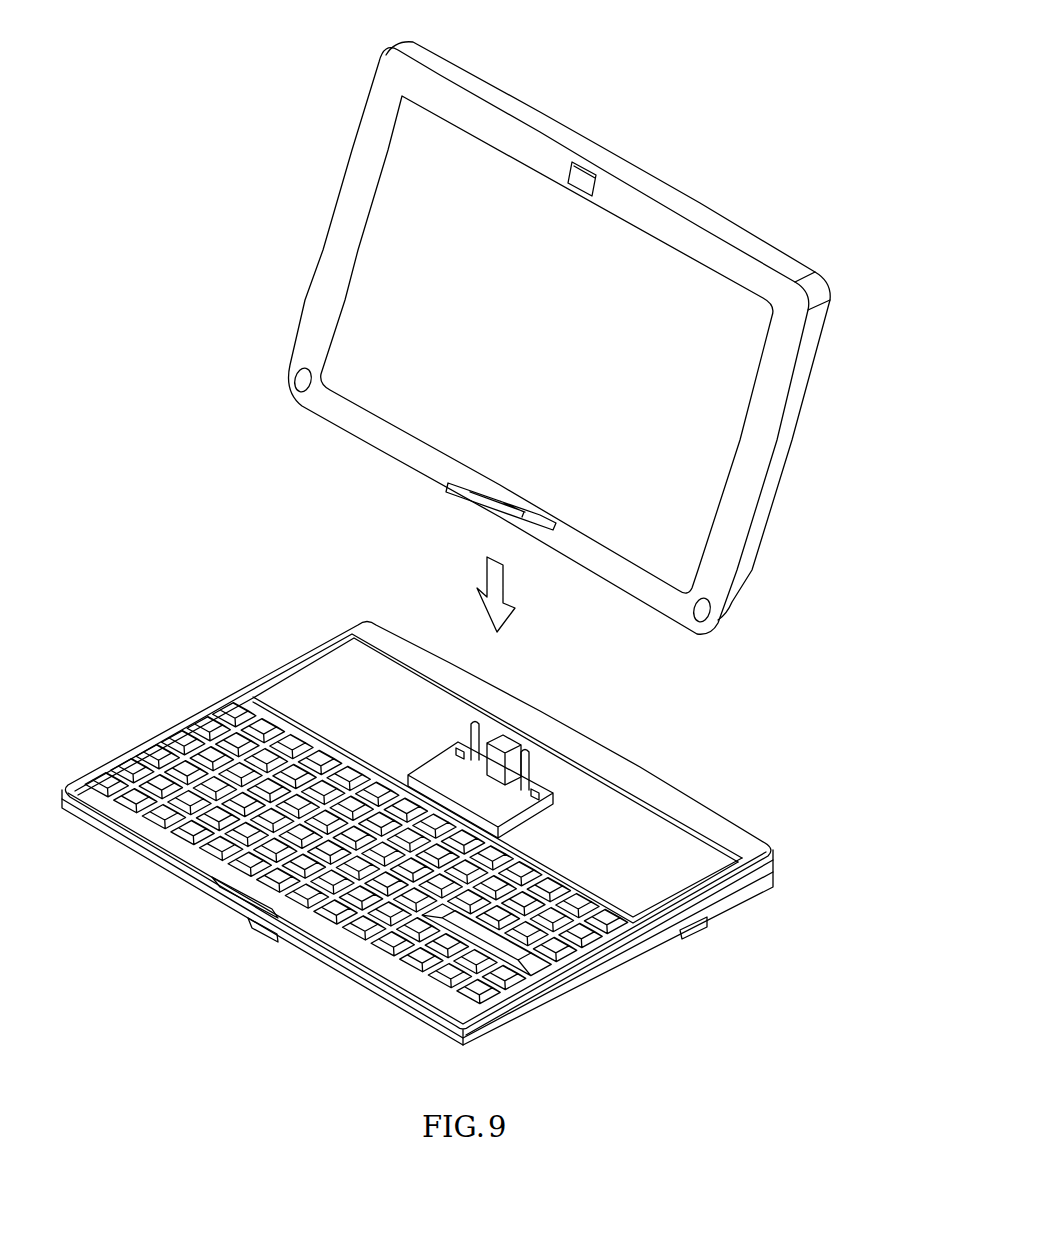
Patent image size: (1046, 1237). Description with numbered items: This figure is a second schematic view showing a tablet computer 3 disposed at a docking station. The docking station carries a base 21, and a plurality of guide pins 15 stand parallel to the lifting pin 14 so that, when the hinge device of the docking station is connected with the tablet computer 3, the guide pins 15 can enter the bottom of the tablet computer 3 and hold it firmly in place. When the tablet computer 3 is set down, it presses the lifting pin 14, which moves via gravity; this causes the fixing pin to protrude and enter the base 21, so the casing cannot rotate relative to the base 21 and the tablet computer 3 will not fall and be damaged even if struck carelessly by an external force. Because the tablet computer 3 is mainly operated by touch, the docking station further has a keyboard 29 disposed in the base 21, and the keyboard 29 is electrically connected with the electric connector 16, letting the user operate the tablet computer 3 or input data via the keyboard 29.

The tablet computer 3 is at (390, 47).
The base 21 is at (370, 615).
The keyboard 29 is at (153, 753).
The lifting pin 14 is at (458, 752).
The guide pins 15 is at (468, 732).
The electric connector 16 is at (508, 743).